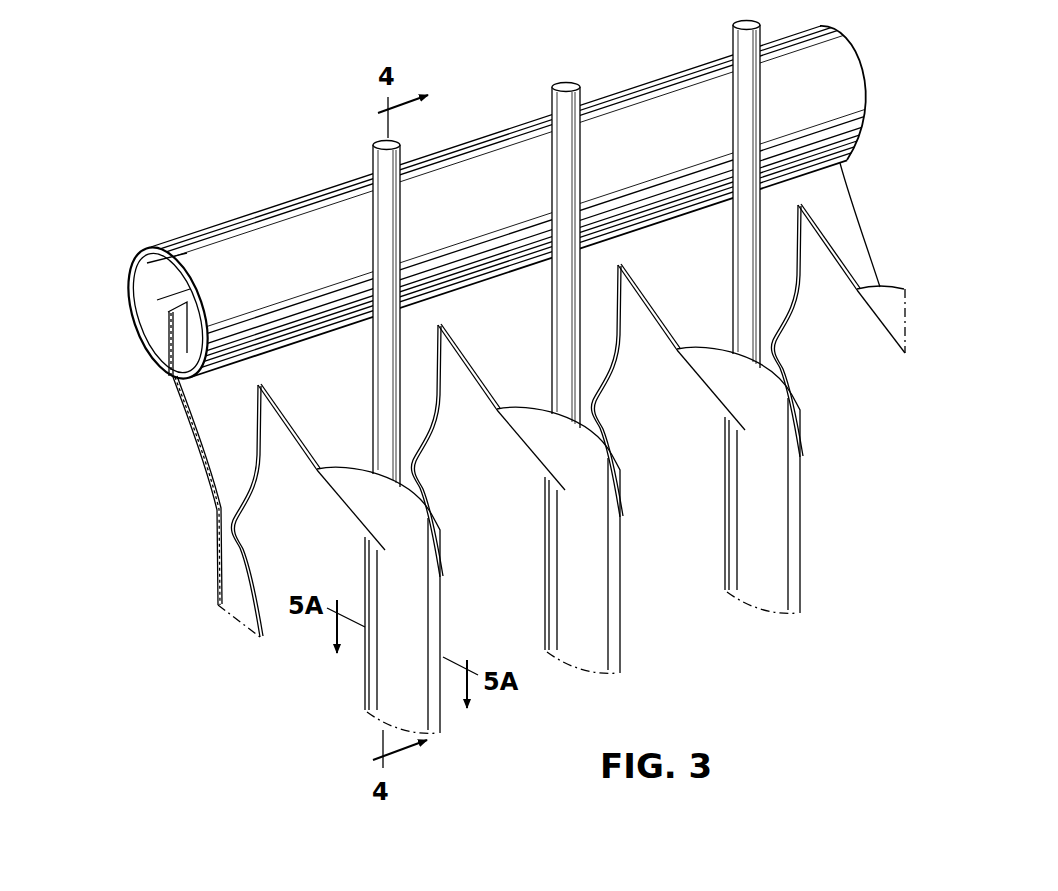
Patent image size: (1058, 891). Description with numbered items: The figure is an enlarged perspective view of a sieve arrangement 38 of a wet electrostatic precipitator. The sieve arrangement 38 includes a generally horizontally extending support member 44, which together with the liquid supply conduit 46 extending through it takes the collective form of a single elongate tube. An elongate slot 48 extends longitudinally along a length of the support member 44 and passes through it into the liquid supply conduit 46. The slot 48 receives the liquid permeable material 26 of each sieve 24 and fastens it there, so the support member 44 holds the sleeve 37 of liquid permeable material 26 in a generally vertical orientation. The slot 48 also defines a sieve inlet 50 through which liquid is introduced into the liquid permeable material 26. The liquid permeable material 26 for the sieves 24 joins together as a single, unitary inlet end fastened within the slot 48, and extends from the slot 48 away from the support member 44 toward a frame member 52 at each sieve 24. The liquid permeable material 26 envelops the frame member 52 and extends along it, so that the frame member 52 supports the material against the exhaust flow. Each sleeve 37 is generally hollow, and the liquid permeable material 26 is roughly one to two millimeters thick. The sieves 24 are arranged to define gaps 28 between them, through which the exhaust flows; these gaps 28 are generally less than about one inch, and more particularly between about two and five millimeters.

The sieve 24 is at (537, 432).
The liquid permeable material 26 is at (555, 540).
The gap 28 is at (531, 467).
The sleeve 37 is at (363, 686).
The sieve arrangement 38 is at (473, 369).
The support member 44 is at (478, 207).
The liquid supply conduit 46 is at (152, 287).
The elongate slot 48 is at (172, 374).
The sieve inlet 50 is at (183, 380).
The frame member 52 is at (373, 160).